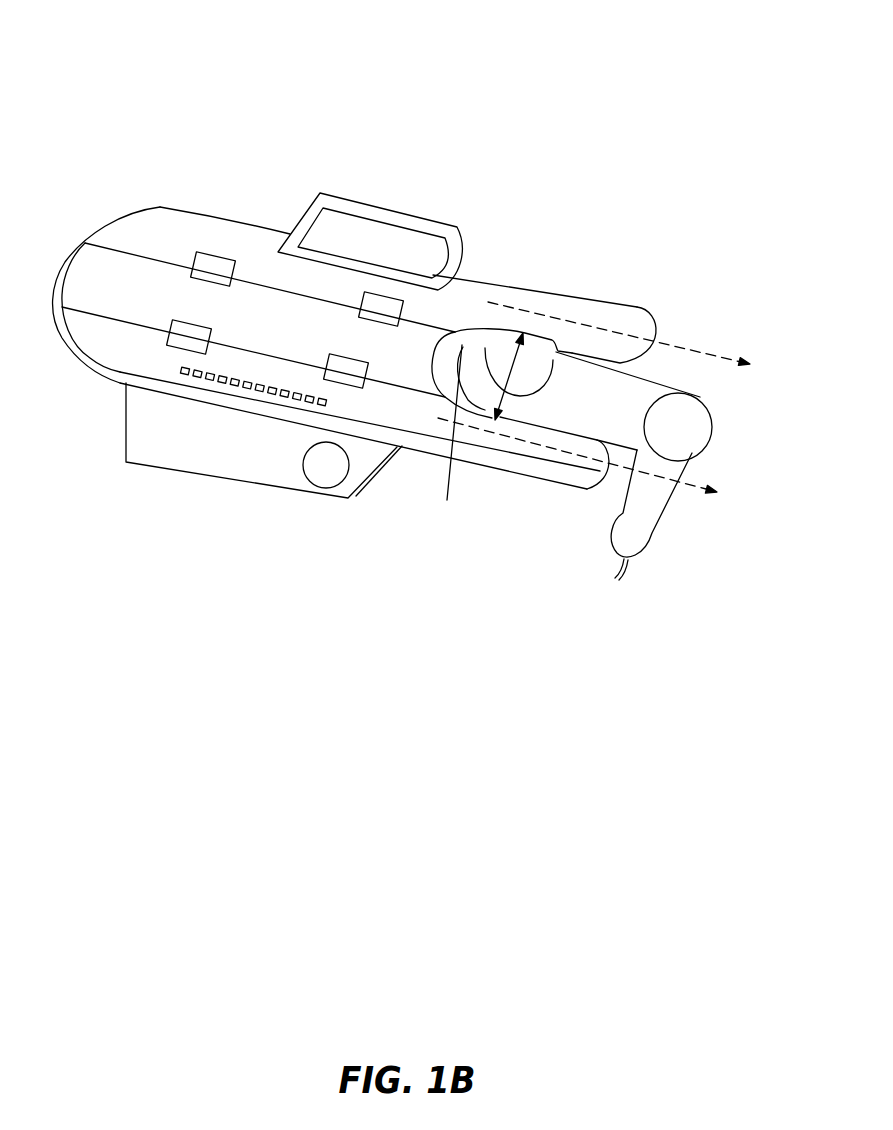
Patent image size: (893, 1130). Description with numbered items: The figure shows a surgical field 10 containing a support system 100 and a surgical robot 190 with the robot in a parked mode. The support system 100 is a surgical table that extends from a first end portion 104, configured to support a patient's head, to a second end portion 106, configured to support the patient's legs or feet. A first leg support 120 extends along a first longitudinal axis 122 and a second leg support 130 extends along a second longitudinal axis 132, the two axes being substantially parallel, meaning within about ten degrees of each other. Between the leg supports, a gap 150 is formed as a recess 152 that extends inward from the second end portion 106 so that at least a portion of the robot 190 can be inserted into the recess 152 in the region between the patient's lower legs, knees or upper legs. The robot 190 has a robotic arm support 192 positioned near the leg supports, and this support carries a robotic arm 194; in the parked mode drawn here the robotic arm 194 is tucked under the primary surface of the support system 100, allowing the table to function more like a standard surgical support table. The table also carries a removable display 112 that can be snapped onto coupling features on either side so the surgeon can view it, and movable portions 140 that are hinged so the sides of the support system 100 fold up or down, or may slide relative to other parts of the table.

The surgical field 10 is at (500, 48).
The support system 100 is at (213, 161).
The first end portion 104 is at (42, 337).
The second end portion 106 is at (579, 505).
The display 112 is at (358, 243).
The first leg support 120 is at (545, 458).
The first longitudinal axis 122 is at (688, 487).
The second leg support 130 is at (637, 322).
The second longitudinal axis 132 is at (695, 353).
The movable portions 140 is at (140, 253).
The gap 150 is at (523, 333).
The recess 152 is at (446, 336).
The surgical robot 190 is at (727, 396).
The robotic arm support 192 is at (447, 500).
The robotic arm 194 is at (655, 500).